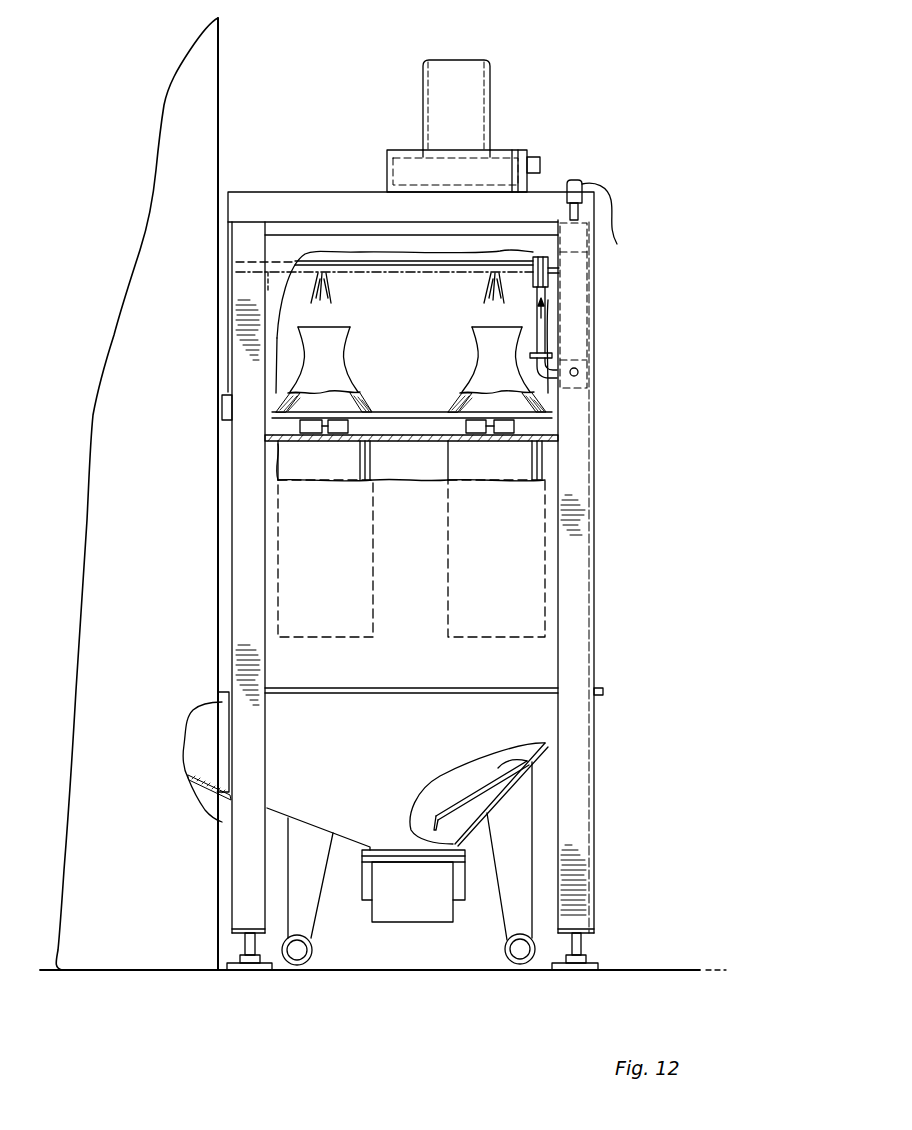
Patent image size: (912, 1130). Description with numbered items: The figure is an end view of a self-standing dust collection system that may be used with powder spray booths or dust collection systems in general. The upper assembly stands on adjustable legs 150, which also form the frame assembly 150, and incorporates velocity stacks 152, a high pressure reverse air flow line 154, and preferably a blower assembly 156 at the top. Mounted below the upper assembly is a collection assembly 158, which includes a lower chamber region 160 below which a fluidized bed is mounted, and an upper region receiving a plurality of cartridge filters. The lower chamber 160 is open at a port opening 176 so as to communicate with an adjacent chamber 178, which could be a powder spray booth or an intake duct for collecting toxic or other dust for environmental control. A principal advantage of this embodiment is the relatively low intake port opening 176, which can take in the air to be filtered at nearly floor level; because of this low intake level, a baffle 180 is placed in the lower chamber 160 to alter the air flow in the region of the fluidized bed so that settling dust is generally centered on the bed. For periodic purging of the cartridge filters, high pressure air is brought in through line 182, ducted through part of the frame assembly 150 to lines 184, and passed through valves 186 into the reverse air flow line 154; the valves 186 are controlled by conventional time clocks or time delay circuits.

The adjustable legs 150 is at (243, 886).
The velocity stacks 152 is at (348, 343).
The high pressure reverse air flow line 154 is at (360, 262).
The blower assembly 156 is at (489, 81).
The collection assembly 158 is at (540, 662).
The lower chamber region 160 is at (543, 718).
The port opening 176 is at (222, 728).
The adjacent chamber 178 is at (101, 413).
The baffle 180 is at (525, 763).
The line 182 is at (610, 223).
The lines 184 is at (540, 325).
The valves 186 is at (548, 275).